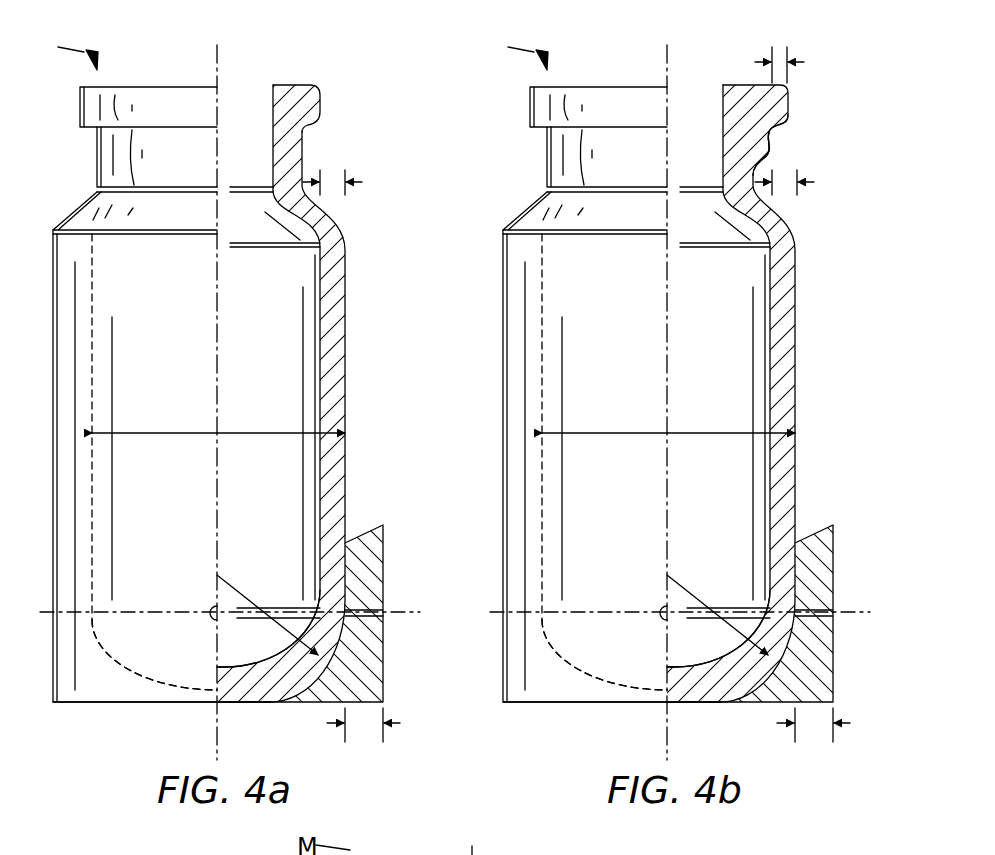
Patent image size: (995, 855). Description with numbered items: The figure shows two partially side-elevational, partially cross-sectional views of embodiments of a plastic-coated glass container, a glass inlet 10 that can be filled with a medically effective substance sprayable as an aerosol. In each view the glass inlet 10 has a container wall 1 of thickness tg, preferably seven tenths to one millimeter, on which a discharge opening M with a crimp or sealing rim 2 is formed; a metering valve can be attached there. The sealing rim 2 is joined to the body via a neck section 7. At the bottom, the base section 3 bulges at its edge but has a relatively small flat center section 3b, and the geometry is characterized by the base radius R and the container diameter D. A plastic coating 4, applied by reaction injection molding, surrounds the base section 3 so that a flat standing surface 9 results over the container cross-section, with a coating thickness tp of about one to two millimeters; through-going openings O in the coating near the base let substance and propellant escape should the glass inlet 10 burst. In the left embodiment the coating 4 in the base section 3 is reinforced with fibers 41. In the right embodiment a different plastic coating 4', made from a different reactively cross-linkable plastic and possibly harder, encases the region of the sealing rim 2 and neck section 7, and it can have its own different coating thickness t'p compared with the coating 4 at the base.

In FIG. 4a, the container wall 1 is at (341, 283).
In FIG. 4b, the container wall 1 is at (791, 283).
In FIG. 4a, the sealing rim 2 is at (321, 106).
In FIG. 4b, the sealing rim 2 is at (789, 104).
In FIG. 4a, the base section 3 is at (109, 663).
In FIG. 4b, the base section 3 is at (559, 663).
In FIG. 4a, the flat center section 3b is at (238, 688).
In FIG. 4b, the flat center section 3b is at (688, 688).
In FIG. 4a, the plastic coating 4 is at (537, 612).
In FIG. 4b, the plastic coating 4 is at (537, 612).
In FIG. 4b, the plastic coating 4' is at (799, 136).
In FIG. 4b, the neck section 7 is at (762, 163).
In FIG. 4a, the flat standing surface 9 is at (142, 704).
In FIG. 4b, the flat standing surface 9 is at (592, 704).
In FIG. 4a, the glass inlet 10 is at (349, 346).
In FIG. 4b, the glass inlet 10 is at (799, 346).
In FIG. 4a, the fibers 41 is at (383, 680).
In FIG. 4a, the discharge opening M is at (68, 53).
In FIG. 4b, the discharge opening M is at (518, 53).
In FIG. 4a, the through-going openings O is at (48, 619).
In FIG. 4b, the through-going openings O is at (498, 619).
In FIG. 4a, the container diameter D is at (196, 433).
In FIG. 4b, the container diameter D is at (646, 433).
In FIG. 4a, the base radius R is at (257, 605).
In FIG. 4b, the base radius R is at (707, 605).
In FIG. 4a, the container wall thickness tg is at (332, 182).
In FIG. 4b, the container wall thickness tg is at (784, 182).
In FIG. 4a, the plastic coating thickness tp is at (363, 725).
In FIG. 4b, the plastic coating thickness tp is at (813, 725).
In FIG. 4b, the coating thickness t'p is at (796, 65).